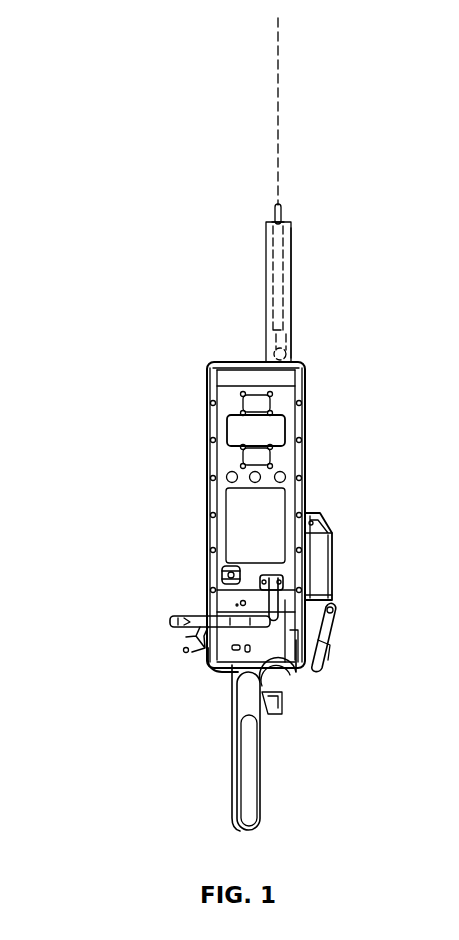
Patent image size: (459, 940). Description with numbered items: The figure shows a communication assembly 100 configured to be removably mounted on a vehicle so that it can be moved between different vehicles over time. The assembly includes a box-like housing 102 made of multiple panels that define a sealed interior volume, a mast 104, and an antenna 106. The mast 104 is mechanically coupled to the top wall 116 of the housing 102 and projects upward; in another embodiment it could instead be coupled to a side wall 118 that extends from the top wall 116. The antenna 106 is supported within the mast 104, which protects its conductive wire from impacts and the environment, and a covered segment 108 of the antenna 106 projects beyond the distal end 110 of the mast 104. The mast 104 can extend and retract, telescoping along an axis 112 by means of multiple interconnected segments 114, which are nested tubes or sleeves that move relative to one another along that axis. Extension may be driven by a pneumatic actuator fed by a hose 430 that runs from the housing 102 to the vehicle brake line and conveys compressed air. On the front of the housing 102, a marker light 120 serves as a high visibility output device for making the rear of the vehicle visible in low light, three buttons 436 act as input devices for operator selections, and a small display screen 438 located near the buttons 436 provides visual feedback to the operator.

The communication assembly 100 is at (88, 349).
The housing 102 is at (213, 527).
The mast 104 is at (266, 298).
The antenna 106 is at (285, 211).
The covered segment 108 is at (272, 215).
The distal end 110 is at (295, 222).
The axis 112 is at (280, 62).
The interconnected segments 114 is at (292, 283).
The top wall 116 is at (238, 362).
The side wall 118 is at (212, 440).
The marker light 120 is at (227, 418).
The hose 430 is at (250, 775).
The buttons 436 is at (230, 483).
The display screen 438 is at (243, 455).